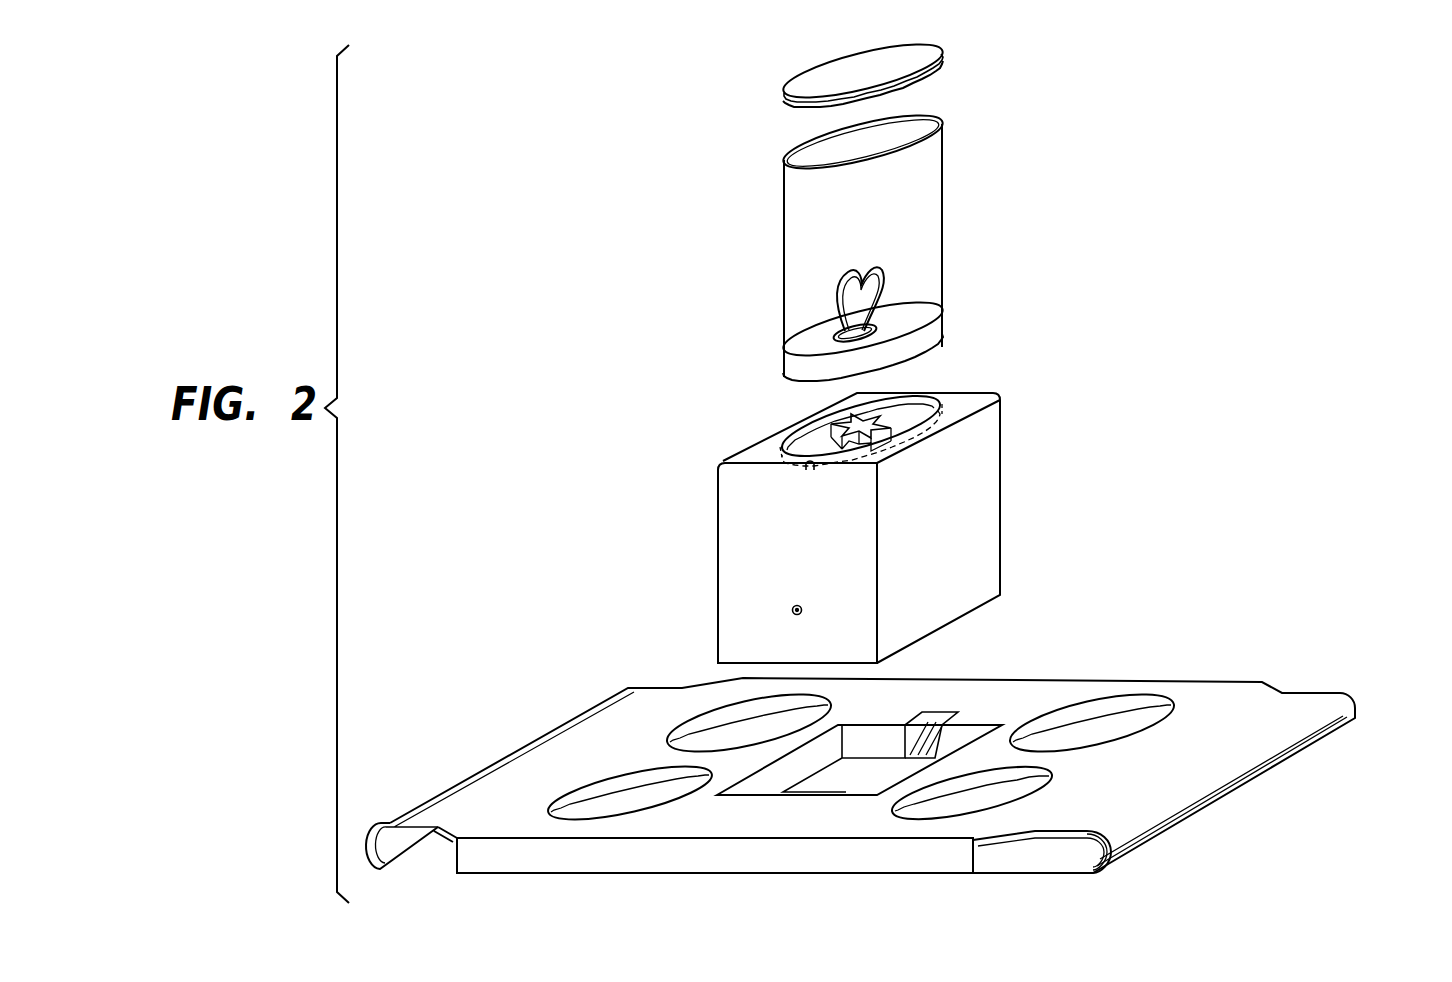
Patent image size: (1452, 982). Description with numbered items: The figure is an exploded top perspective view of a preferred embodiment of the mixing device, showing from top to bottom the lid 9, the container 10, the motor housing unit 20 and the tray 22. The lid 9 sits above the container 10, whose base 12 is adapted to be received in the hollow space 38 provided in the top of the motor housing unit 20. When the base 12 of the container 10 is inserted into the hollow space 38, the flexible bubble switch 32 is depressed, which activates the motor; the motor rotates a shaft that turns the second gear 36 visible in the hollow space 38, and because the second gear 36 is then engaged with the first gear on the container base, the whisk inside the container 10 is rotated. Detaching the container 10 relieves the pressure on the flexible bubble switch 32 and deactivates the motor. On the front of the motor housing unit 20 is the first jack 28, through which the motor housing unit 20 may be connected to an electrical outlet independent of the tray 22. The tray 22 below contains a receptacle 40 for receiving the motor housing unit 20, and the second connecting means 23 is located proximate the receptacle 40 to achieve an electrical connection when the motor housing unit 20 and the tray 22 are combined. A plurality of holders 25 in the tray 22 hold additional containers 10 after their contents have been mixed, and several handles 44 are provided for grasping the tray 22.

The lid 9 is at (823, 78).
The container 10 is at (740, 235).
The base 12 is at (935, 336).
The motor housing unit 20 is at (652, 460).
The tray 22 is at (570, 686).
The second connecting means 23 is at (932, 752).
The holders 25 is at (1110, 730).
The first jack 28 is at (796, 604).
The flexible bubble switch 32 is at (816, 478).
The second gear 36 is at (885, 427).
The hollow space 38 is at (796, 440).
The receptacle 40 is at (805, 768).
The handles 44 is at (1095, 848).